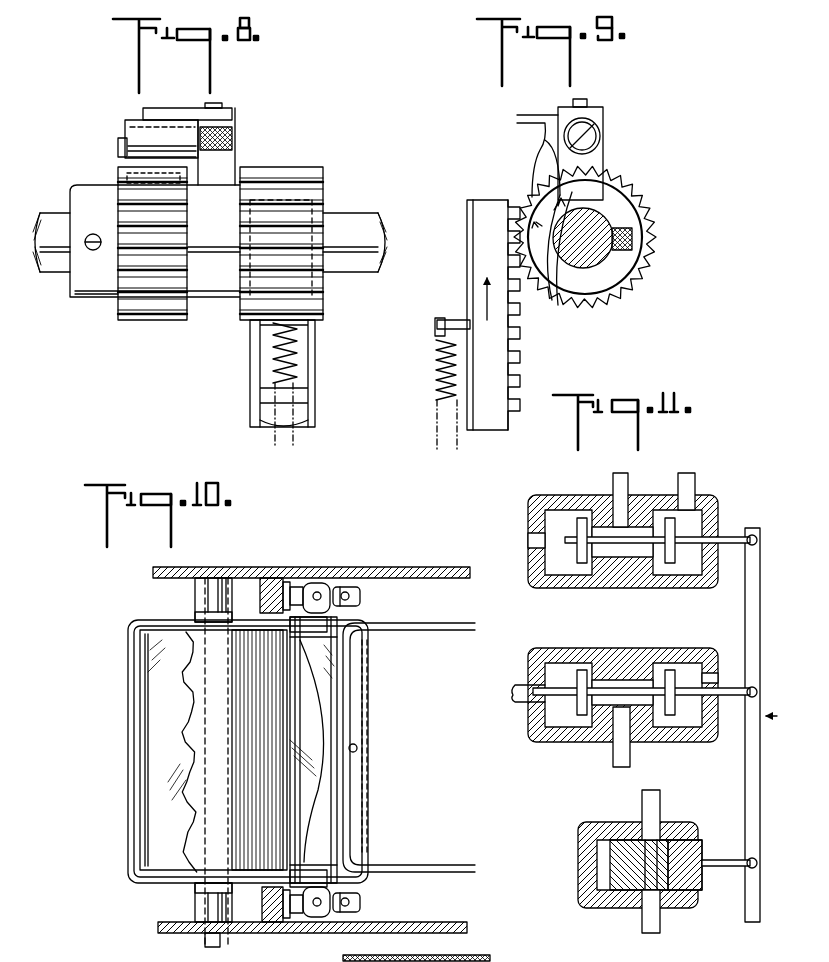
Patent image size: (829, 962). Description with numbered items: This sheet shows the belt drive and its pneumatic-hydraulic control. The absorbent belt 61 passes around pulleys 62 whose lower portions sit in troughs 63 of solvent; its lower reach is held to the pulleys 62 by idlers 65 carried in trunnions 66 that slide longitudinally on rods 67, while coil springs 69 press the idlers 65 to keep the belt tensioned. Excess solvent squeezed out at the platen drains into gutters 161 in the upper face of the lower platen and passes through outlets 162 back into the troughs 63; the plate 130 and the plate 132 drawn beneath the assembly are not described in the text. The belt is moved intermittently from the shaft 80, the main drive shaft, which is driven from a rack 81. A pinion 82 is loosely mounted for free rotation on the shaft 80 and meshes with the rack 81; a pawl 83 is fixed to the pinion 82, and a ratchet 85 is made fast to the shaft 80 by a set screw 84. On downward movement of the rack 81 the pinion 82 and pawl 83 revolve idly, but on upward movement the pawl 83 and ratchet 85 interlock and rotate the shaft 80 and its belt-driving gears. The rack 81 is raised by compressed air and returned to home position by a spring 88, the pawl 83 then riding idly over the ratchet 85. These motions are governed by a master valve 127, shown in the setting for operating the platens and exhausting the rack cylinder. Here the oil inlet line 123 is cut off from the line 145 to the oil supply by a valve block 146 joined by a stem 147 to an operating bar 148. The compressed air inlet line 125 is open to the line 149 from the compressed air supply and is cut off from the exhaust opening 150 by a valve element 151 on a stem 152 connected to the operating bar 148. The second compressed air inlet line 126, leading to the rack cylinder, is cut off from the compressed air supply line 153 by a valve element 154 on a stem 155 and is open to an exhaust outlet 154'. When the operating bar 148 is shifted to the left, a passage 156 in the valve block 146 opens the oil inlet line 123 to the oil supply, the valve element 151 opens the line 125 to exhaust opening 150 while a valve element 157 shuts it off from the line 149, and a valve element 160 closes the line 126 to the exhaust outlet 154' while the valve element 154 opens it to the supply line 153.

In FIG. 8, the shaft 80 is at (343, 218).
In FIG. 9, the shaft 80 is at (588, 222).
In FIG. 8, the rack 81 is at (298, 357).
In FIG. 9, the rack 81 is at (470, 228).
In FIG. 8, the pinion 82 is at (278, 170).
In FIG. 9, the pinion 82 is at (541, 283).
In FIG. 8, the pawl 83 is at (133, 165).
In FIG. 9, the pawl 83 is at (545, 147).
In FIG. 8, the set screw 84 is at (90, 250).
In FIG. 9, the set screw 84 is at (647, 243).
In FIG. 8, the ratchet 85 is at (124, 297).
In FIG. 9, the ratchet 85 is at (637, 212).
In FIG. 8, the spring 88 is at (272, 443).
In FIG. 9, the spring 88 is at (437, 397).
In FIG. 10, the absorbent belt 61 is at (177, 712).
In FIG. 10, the pulleys 62 is at (203, 857).
In FIG. 10, the troughs 63 is at (130, 688).
In FIG. 10, the idlers 65 is at (283, 888).
In FIG. 10, the trunnions 66 is at (322, 583).
In FIG. 10, the rods 67 is at (353, 588).
In FIG. 10, the coil springs 69 is at (343, 893).
In FIG. 10, the base plate 130 is at (311, 762).
In FIG. 10, the plate 132 is at (456, 956).
In FIG. 10, the gutters 161 is at (368, 630).
In FIG. 10, the outlets 162 is at (357, 748).
In FIG. 11, the oil inlet line 123 is at (656, 926).
In FIG. 11, the compressed air inlet line 125 is at (627, 483).
In FIG. 11, the second compressed air inlet line 126 is at (616, 762).
In FIG. 11, the master valve 127 is at (623, 527).
In FIG. 11, the line 145 is at (653, 803).
In FIG. 11, the valve block 146 is at (620, 860).
In FIG. 11, the stem 147 is at (731, 867).
In FIG. 11, the operating bar 148 is at (748, 830).
In FIG. 11, the line 149 is at (689, 477).
In FIG. 11, the exhaust opening 150 is at (531, 541).
In FIG. 11, the valve element 151 is at (597, 498).
In FIG. 11, the stem 152 is at (724, 538).
In FIG. 11, the compressed air supply line 153 is at (520, 705).
In FIG. 11, the valve element 154 is at (593, 669).
In FIG. 11, the exhaust outlet 154' is at (702, 717).
In FIG. 11, the stem 155 is at (656, 689).
In FIG. 11, the passage 156 is at (648, 859).
In FIG. 11, the valve element 157 is at (673, 525).
In FIG. 11, the valve element 160 is at (623, 700).